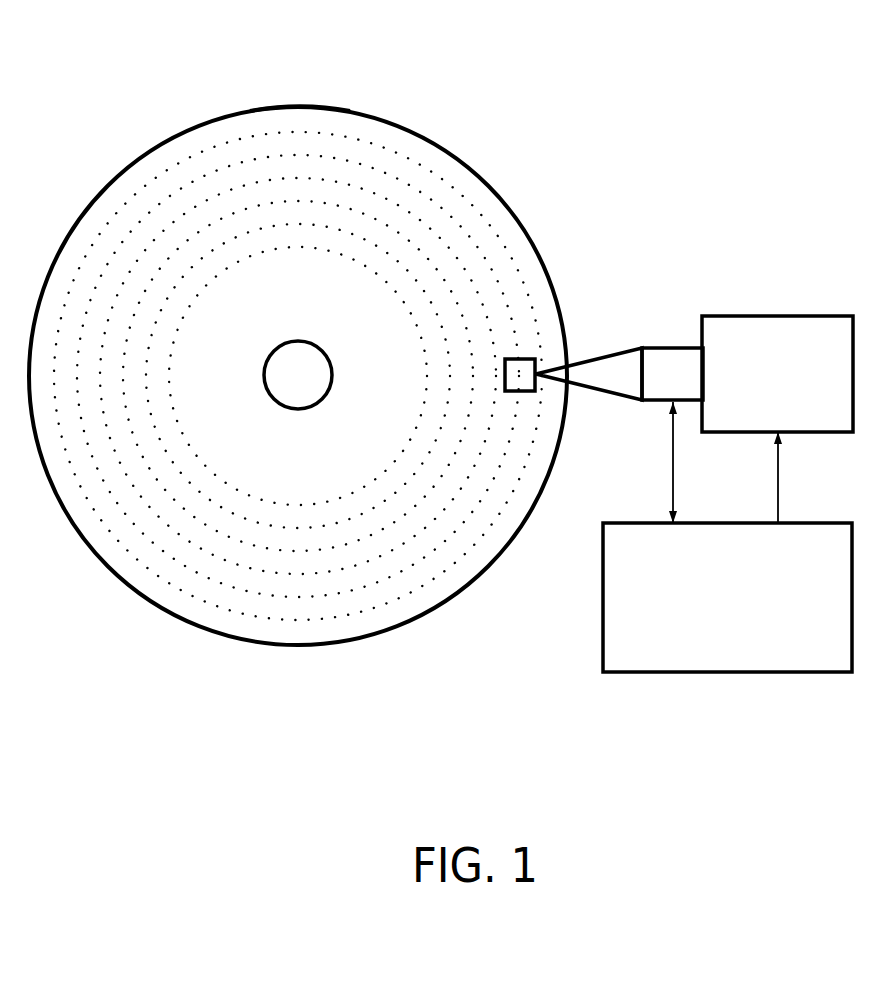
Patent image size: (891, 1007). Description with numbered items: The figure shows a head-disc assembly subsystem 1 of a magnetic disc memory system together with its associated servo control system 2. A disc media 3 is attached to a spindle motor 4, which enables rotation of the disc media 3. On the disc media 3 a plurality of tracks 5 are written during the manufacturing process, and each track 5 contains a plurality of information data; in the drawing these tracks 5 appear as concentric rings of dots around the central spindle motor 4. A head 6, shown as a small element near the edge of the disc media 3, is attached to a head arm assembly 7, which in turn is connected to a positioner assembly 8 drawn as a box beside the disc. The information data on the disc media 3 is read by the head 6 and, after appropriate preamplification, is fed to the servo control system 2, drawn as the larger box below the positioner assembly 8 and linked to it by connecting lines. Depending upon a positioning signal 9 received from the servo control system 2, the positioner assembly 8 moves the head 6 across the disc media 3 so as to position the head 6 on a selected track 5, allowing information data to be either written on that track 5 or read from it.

The head-disc assembly subsystem 1 is at (134, 108).
The servo control system 2 is at (648, 658).
The disc media 3 is at (302, 107).
The spindle motor 4 is at (293, 391).
The tracks 5 is at (365, 135).
The head 6 is at (528, 358).
The head arm assembly 7 is at (622, 358).
The positioner assembly 8 is at (812, 337).
The positioning signal 9 is at (778, 497).